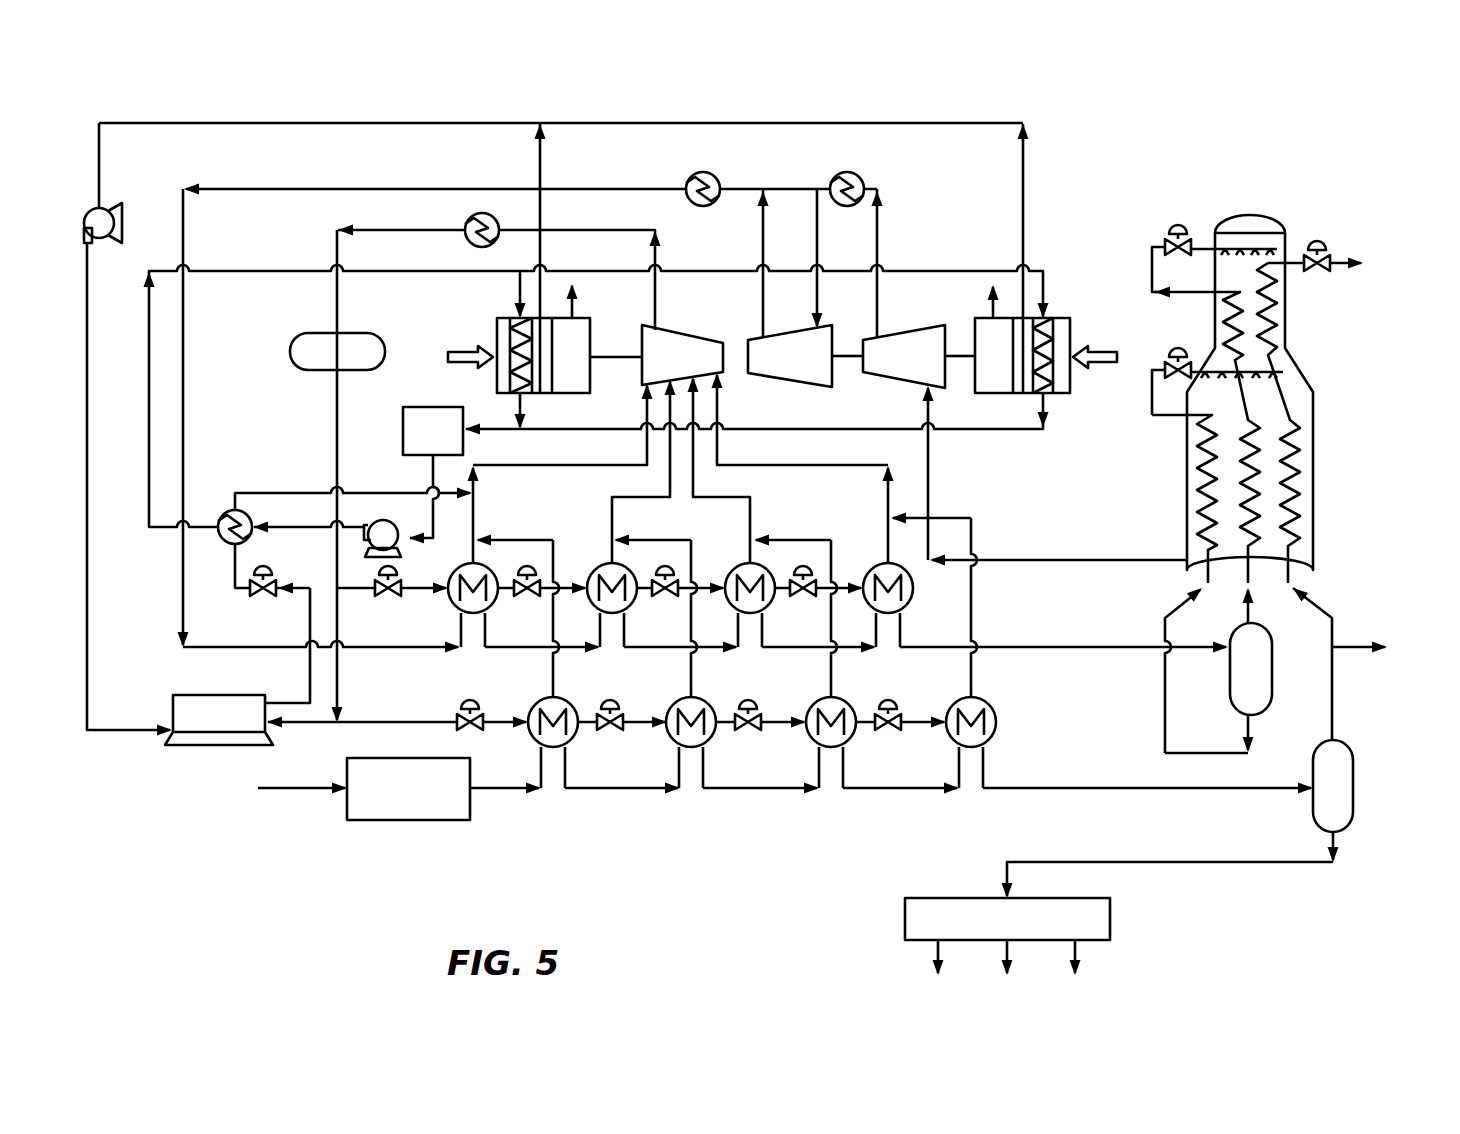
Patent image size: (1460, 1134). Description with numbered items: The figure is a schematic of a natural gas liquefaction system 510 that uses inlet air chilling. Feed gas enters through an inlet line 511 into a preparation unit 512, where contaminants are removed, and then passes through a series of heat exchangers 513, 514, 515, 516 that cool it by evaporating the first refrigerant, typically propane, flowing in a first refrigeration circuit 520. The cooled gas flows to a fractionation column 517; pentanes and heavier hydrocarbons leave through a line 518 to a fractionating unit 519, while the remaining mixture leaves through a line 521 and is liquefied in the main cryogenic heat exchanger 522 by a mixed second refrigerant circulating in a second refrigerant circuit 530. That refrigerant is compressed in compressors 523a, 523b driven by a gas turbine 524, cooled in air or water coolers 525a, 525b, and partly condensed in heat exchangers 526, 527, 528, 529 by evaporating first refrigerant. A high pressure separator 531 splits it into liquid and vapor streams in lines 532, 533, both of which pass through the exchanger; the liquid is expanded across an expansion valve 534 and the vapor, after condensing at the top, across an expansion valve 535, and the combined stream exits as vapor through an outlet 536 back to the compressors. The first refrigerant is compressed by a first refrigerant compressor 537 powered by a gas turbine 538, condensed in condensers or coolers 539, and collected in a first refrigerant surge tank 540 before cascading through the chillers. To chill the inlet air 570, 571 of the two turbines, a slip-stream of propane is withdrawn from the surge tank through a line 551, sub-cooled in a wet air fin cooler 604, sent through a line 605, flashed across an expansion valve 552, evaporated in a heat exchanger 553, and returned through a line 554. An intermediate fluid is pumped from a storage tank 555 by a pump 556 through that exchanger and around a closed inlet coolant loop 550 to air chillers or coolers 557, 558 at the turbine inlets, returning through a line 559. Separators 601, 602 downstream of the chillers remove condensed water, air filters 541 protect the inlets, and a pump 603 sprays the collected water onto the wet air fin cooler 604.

The system 510 is at (334, 102).
The inlet line 511 is at (316, 792).
The preparation unit 512 is at (442, 822).
The heat exchanger 513 is at (538, 702).
The heat exchanger 514 is at (676, 702).
The heat exchanger 515 is at (816, 702).
The heat exchanger 516 is at (954, 702).
The fractionation column 517 is at (1356, 766).
The line 518 is at (1152, 862).
The fractionating unit 519 is at (946, 896).
The first refrigeration circuit 520 is at (335, 436).
The line 521 is at (1326, 610).
The main cryogenic heat exchanger 522 is at (1308, 380).
The compressor 523a is at (924, 382).
The compressor 523b is at (812, 382).
The gas turbine 524 is at (980, 328).
The air or water cooler 525a is at (690, 178).
The air or water cooler 525b is at (832, 178).
The heat exchanger 526 is at (450, 604).
The heat exchanger 527 is at (592, 570).
The heat exchanger 528 is at (730, 570).
The heat exchanger 529 is at (868, 570).
The second refrigerant circuit 530 is at (181, 596).
The high pressure separator 531 is at (1272, 694).
The line 532 is at (1164, 728).
The line 533 is at (1250, 610).
The expansion valve 534 is at (1172, 352).
The expansion valve 535 is at (1170, 230).
The outlet 536 is at (1064, 559).
The first refrigerant compressor 537 is at (686, 336).
The gas turbine 538 is at (582, 328).
The condensers or coolers 539 is at (466, 221).
The first refrigerant surge tank 540 is at (292, 340).
The air filters 541 is at (498, 330).
The inlet coolant loop 550 is at (268, 270).
The line 551 is at (308, 724).
The expansion valve 552 is at (272, 576).
The heat exchanger 553 is at (226, 512).
The line 554 is at (300, 490).
The storage tank 555 is at (402, 424).
The pump 556 is at (376, 522).
The air chiller or cooler 557 is at (1058, 350).
The air chiller or cooler 558 is at (516, 376).
The line 559 is at (552, 434).
The inlet air 570 is at (1100, 366).
The inlet air 571 is at (450, 354).
The separator 601 is at (541, 396).
The separator 602 is at (1026, 396).
The pump 603 is at (122, 212).
The wet air fin cooler 604 is at (172, 704).
The line 605 is at (309, 671).